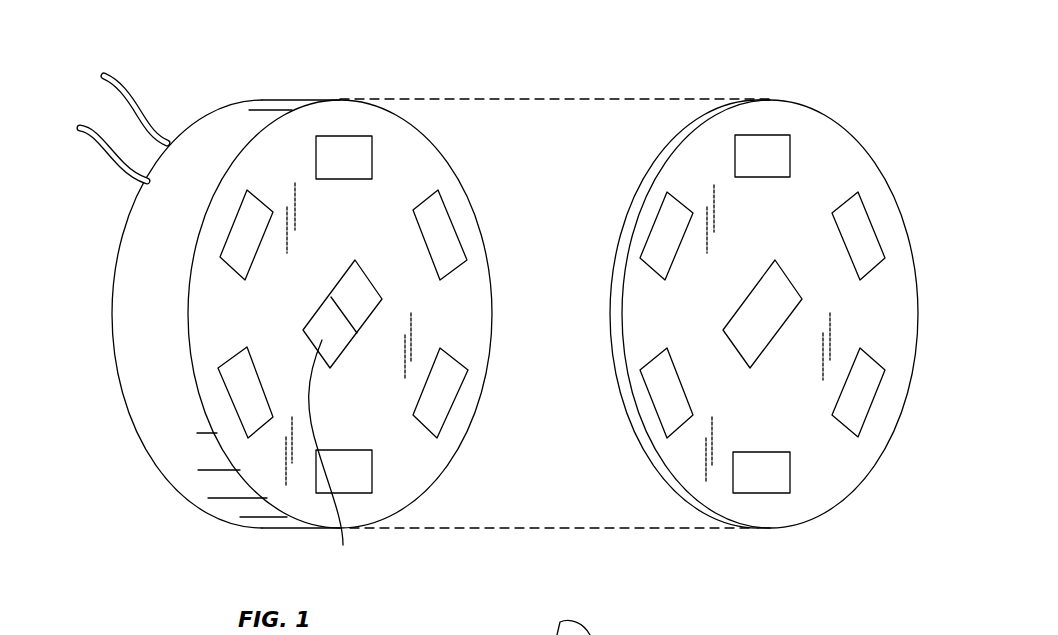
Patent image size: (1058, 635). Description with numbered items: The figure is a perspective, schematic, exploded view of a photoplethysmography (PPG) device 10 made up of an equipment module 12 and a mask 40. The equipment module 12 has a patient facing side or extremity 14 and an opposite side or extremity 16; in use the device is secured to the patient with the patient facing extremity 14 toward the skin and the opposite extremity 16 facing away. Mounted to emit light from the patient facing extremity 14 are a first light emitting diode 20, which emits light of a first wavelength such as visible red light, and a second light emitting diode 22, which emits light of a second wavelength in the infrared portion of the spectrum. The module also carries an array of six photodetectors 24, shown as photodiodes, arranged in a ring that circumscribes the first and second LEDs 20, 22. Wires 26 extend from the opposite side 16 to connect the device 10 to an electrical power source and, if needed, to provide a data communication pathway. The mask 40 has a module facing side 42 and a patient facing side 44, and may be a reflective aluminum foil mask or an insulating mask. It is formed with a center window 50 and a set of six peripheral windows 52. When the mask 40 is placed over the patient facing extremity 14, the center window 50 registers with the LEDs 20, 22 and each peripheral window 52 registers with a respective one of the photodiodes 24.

The photoplethysmography (PPG) device 10 is at (648, 45).
The equipment module 12 is at (279, 108).
The patient facing side or extremity 14 is at (438, 173).
The opposite side or extremity 16 is at (194, 126).
The first light emitting diode 20 is at (331, 457).
The second light emitting diode 22 is at (362, 272).
The photodetector 24 is at (352, 149).
The wires 26 is at (117, 90).
The mask 40 is at (847, 140).
The module facing side 42 is at (660, 140).
The patient facing side 44 is at (803, 128).
The center window 50 is at (787, 300).
The peripheral windows 52 is at (760, 152).